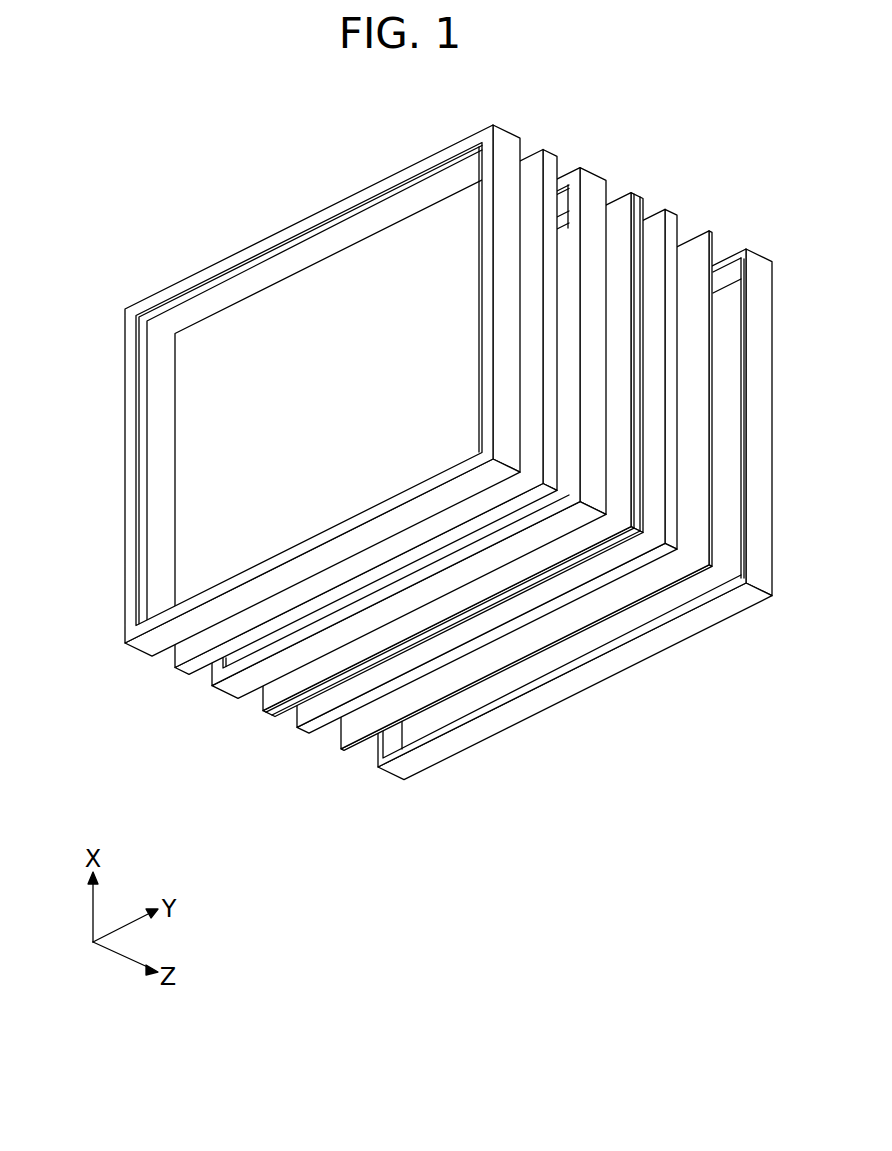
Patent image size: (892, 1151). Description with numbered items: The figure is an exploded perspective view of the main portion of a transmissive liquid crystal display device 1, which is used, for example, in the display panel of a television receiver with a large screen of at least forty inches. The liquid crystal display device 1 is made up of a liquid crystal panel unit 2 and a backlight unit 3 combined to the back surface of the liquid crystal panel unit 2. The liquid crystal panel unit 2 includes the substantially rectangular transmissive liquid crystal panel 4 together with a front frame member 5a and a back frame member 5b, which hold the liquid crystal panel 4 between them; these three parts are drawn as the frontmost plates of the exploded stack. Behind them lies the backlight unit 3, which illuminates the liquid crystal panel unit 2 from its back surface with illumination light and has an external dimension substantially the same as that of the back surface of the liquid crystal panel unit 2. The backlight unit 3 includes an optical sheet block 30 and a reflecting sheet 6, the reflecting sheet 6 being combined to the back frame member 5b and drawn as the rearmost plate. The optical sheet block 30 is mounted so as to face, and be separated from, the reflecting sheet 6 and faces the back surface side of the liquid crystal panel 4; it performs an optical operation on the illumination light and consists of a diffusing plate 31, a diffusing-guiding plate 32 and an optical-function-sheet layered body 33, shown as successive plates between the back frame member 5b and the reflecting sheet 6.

The liquid crystal display device 1 is at (400, 117).
The liquid crystal panel unit 2 is at (361, 458).
The backlight unit 3 is at (457, 766).
The liquid crystal panel 4 is at (182, 672).
The front frame member 5a is at (238, 745).
The back frame member 5b is at (222, 690).
The reflecting sheet 6 is at (397, 772).
The optical sheet block 30 is at (479, 544).
The diffusing plate 31 is at (345, 745).
The diffusing-guiding plate 32 is at (302, 726).
The optical-function-sheet layered body 33 is at (267, 707).